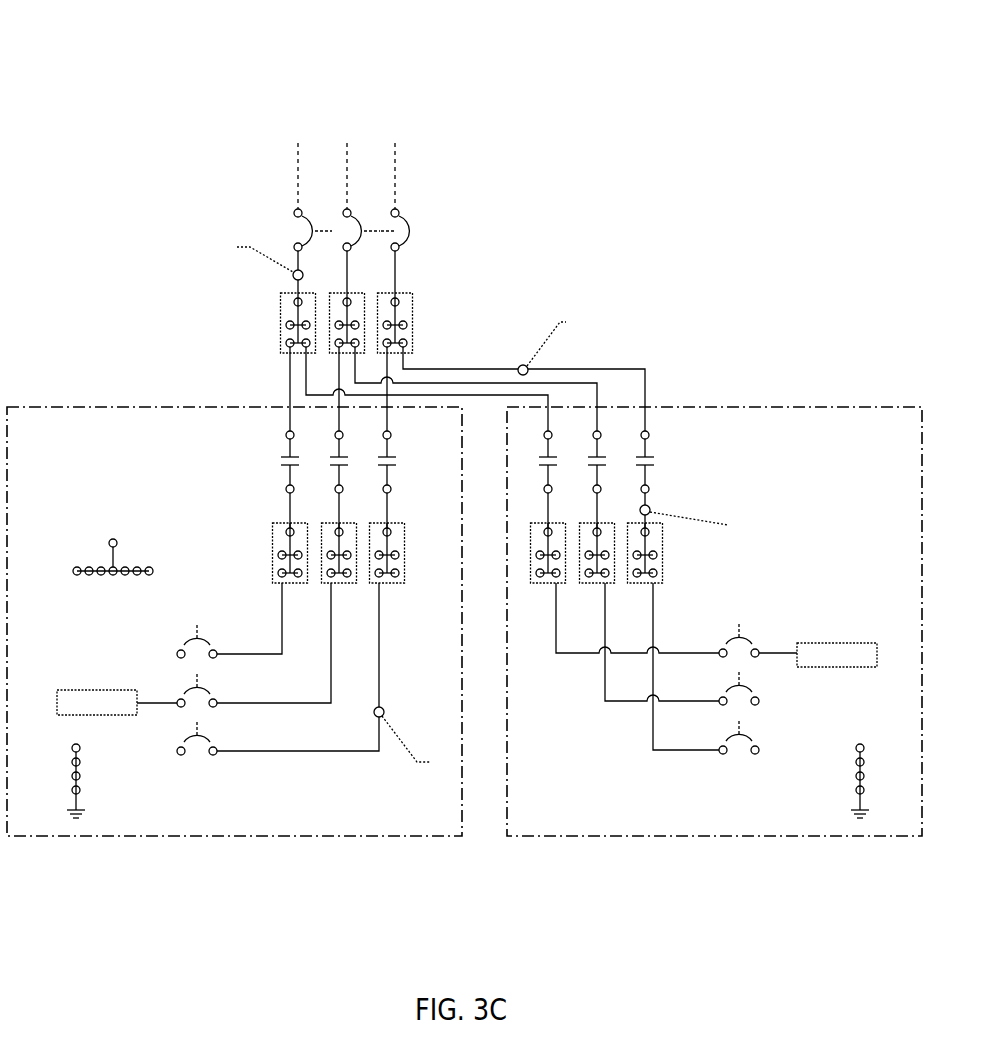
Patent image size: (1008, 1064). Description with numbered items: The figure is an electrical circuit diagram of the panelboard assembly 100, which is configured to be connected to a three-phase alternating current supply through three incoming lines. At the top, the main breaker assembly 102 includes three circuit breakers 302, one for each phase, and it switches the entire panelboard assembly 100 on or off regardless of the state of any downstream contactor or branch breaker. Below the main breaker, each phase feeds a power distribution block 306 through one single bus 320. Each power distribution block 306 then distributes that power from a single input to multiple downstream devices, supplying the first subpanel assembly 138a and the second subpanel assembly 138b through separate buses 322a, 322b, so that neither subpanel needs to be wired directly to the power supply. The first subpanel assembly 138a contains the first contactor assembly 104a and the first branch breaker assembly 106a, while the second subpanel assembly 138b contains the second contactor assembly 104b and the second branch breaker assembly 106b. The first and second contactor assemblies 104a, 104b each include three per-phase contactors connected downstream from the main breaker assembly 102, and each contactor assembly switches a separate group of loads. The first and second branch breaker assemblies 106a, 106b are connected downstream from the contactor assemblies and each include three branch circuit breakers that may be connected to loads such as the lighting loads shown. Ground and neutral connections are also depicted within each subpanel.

The panelboard assembly 100 is at (118, 123).
The main breaker assembly 102 is at (280, 223).
The circuit breaker 302 is at (310, 214).
The bus 320 is at (292, 277).
The power distribution block 306 is at (290, 318).
The bus 322a is at (289, 370).
The bus 322b is at (307, 366).
The first contactor assembly 104a is at (267, 426).
The second contactor assembly 104b is at (658, 436).
The first branch breaker assembly 106a is at (155, 634).
The second branch breaker assembly 106b is at (797, 613).
The first subpanel assembly 138a is at (398, 838).
The second subpanel assembly 138b is at (710, 838).